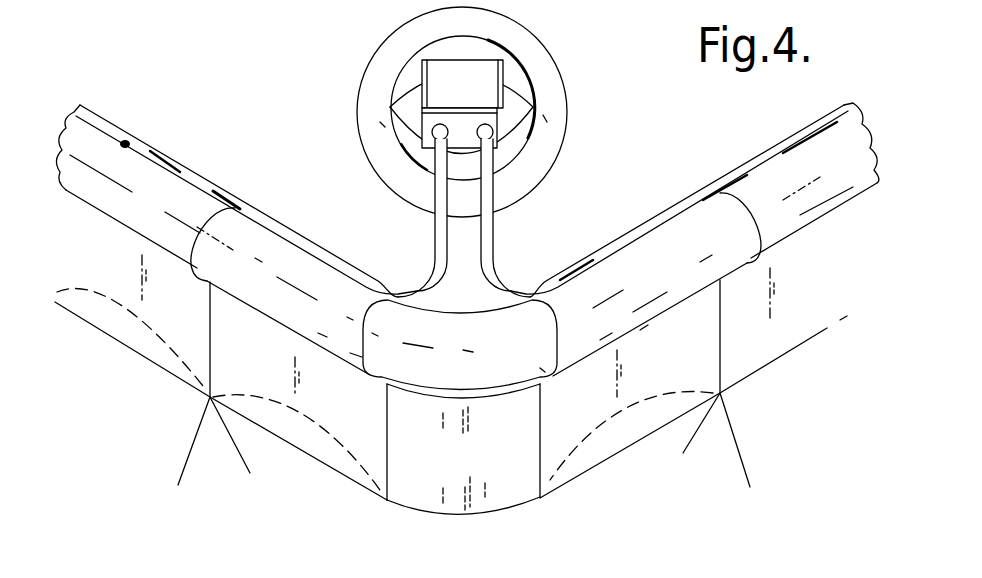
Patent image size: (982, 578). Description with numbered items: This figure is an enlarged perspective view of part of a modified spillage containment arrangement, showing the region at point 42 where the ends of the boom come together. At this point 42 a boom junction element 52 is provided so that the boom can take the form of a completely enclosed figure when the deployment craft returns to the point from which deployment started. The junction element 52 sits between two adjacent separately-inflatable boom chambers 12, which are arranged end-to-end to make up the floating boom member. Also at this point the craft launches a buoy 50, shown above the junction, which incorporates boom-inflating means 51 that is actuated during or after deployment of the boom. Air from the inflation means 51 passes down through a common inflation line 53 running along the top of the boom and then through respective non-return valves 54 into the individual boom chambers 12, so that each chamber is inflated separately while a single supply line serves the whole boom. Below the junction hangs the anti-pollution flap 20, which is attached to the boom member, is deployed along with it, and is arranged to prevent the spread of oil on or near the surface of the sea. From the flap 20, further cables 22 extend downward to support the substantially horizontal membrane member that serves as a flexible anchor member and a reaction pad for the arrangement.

The buoy 50 is at (352, 82).
The boom-inflating means 51 is at (487, 86).
The point 42 is at (562, 221).
The common inflation line 53 is at (187, 170).
The non-return valve 54 is at (292, 241).
The boom chamber 12 is at (680, 238).
The boom junction element 52 is at (447, 350).
The anti-pollution flap 20 is at (477, 468).
The cable 22 is at (741, 451).